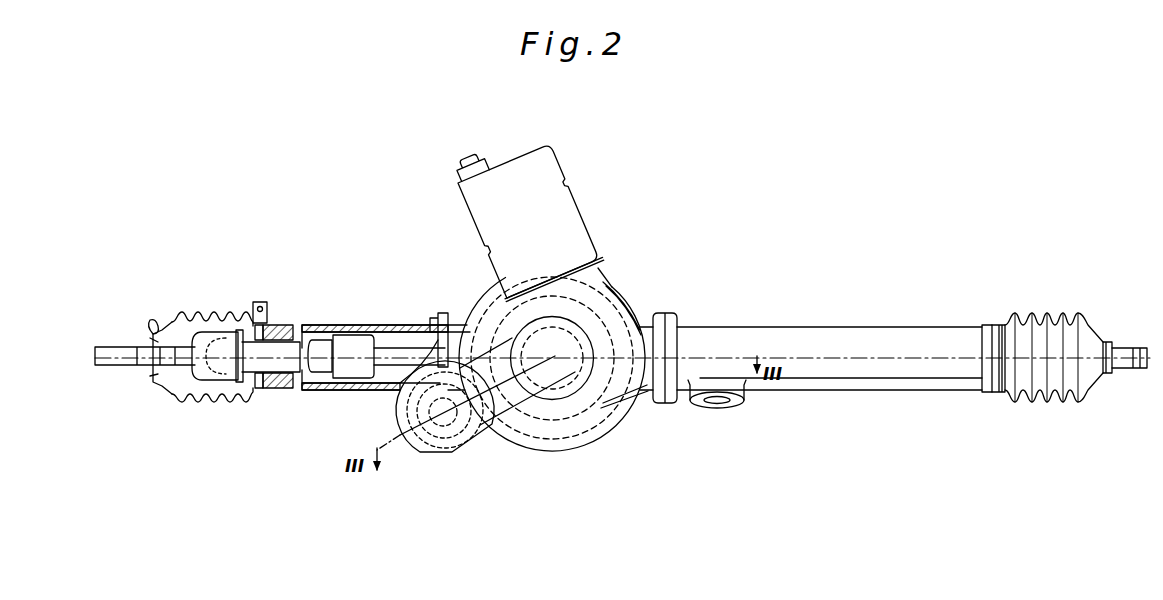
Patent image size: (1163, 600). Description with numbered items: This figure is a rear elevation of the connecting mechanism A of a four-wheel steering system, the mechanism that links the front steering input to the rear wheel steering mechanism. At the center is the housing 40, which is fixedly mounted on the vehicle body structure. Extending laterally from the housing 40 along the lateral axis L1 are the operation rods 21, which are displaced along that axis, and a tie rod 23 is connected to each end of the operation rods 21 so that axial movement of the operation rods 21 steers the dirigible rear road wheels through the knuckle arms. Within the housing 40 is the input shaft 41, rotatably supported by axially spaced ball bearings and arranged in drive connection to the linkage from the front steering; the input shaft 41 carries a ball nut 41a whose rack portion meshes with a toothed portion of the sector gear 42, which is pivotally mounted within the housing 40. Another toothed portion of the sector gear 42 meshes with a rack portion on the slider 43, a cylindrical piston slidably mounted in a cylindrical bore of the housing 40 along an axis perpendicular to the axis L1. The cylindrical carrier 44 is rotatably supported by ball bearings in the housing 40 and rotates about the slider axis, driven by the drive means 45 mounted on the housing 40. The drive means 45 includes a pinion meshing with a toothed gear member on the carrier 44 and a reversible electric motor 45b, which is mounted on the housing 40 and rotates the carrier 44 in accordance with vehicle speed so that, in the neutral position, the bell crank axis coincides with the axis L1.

The operation rods 21 is at (318, 345).
The tie rods 23 is at (117, 360).
The housing 40 is at (627, 308).
The input shaft 41 is at (457, 446).
The ball nut 41a is at (423, 451).
The sector gear 42 is at (522, 433).
The slider 43 is at (572, 443).
The cylindrical carrier 44 is at (597, 430).
The drive means 45 is at (604, 242).
The reversible electric motor 45b is at (562, 182).
The connecting mechanism A is at (650, 251).
The lateral axis L1 is at (873, 357).